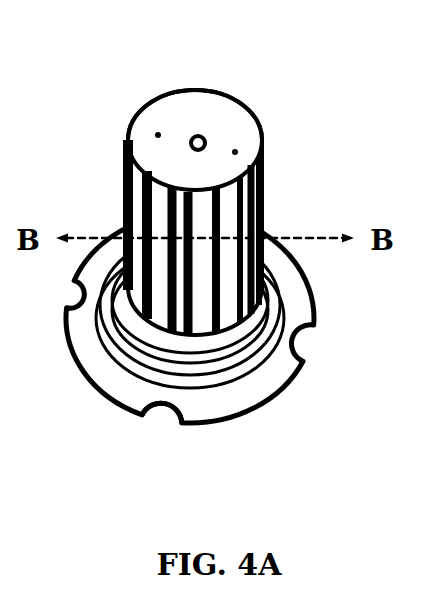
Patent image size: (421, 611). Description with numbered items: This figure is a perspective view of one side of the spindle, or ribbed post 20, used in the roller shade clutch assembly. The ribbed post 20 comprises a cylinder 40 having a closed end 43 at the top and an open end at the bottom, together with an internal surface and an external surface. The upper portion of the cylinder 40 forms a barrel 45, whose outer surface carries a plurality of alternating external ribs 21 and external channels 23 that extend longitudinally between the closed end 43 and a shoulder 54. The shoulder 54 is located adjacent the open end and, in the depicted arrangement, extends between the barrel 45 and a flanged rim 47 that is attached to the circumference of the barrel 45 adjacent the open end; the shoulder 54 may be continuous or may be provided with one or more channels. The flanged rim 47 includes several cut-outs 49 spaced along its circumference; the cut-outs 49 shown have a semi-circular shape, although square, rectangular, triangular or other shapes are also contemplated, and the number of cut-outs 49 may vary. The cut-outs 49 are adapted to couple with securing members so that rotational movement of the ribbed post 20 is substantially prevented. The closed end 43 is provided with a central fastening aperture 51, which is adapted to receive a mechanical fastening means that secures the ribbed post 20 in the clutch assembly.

The ribbed post 20 is at (147, 73).
The external ribs 21 is at (232, 222).
The external channels 23 is at (201, 207).
The cylinder 40 is at (120, 295).
The closed end 43 is at (178, 112).
The barrel 45 is at (278, 202).
The flanged rim 47 is at (252, 390).
The cut-outs 49 is at (160, 419).
The fastening aperture 51 is at (198, 136).
The shoulder 54 is at (155, 342).